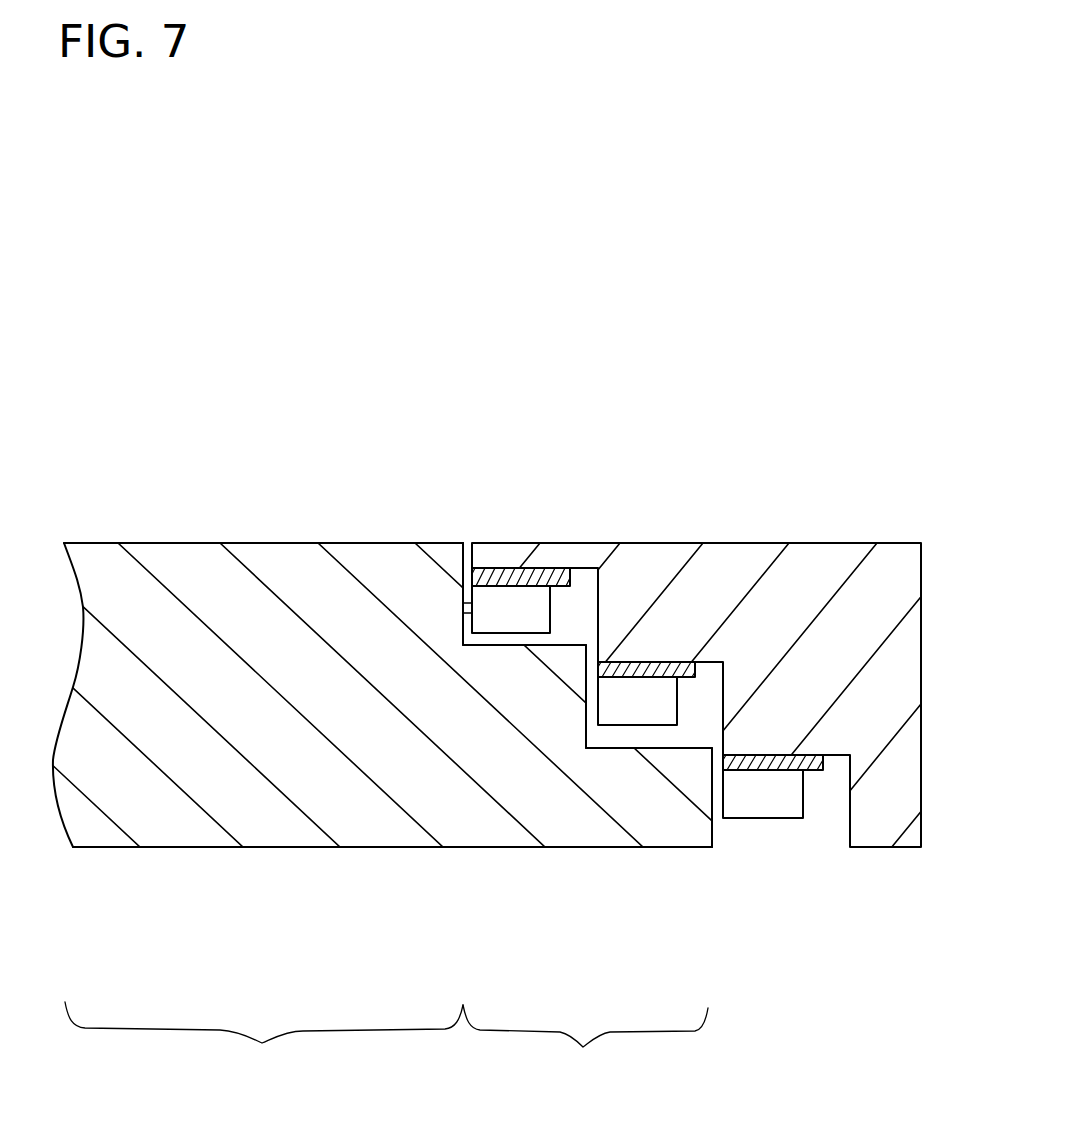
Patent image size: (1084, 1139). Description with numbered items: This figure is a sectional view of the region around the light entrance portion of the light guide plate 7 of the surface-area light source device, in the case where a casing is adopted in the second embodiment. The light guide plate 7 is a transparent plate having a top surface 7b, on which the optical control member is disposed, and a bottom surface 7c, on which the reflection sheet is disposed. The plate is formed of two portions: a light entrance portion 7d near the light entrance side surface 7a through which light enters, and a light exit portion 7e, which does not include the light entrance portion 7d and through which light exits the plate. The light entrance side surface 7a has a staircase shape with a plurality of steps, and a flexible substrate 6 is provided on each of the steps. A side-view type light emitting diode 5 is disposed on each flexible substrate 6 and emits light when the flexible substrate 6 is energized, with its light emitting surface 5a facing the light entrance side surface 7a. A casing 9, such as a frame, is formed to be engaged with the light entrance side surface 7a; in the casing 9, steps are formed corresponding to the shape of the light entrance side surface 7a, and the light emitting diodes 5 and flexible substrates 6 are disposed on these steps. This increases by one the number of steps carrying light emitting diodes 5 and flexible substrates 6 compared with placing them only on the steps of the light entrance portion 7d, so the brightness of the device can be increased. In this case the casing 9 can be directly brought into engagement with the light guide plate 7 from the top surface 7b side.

The light guide plate 7 is at (367, 848).
The light entrance side surface 7a is at (480, 570).
The top surface 7b is at (143, 543).
The bottom surface 7c is at (220, 848).
The light entrance portion 7d is at (585, 1045).
The light exit portion 7e is at (264, 1045).
The light emitting diode 5 is at (550, 615).
The light emitting surface 5a is at (463, 613).
The flexible substrate 6 is at (597, 568).
The casing 9 is at (885, 543).